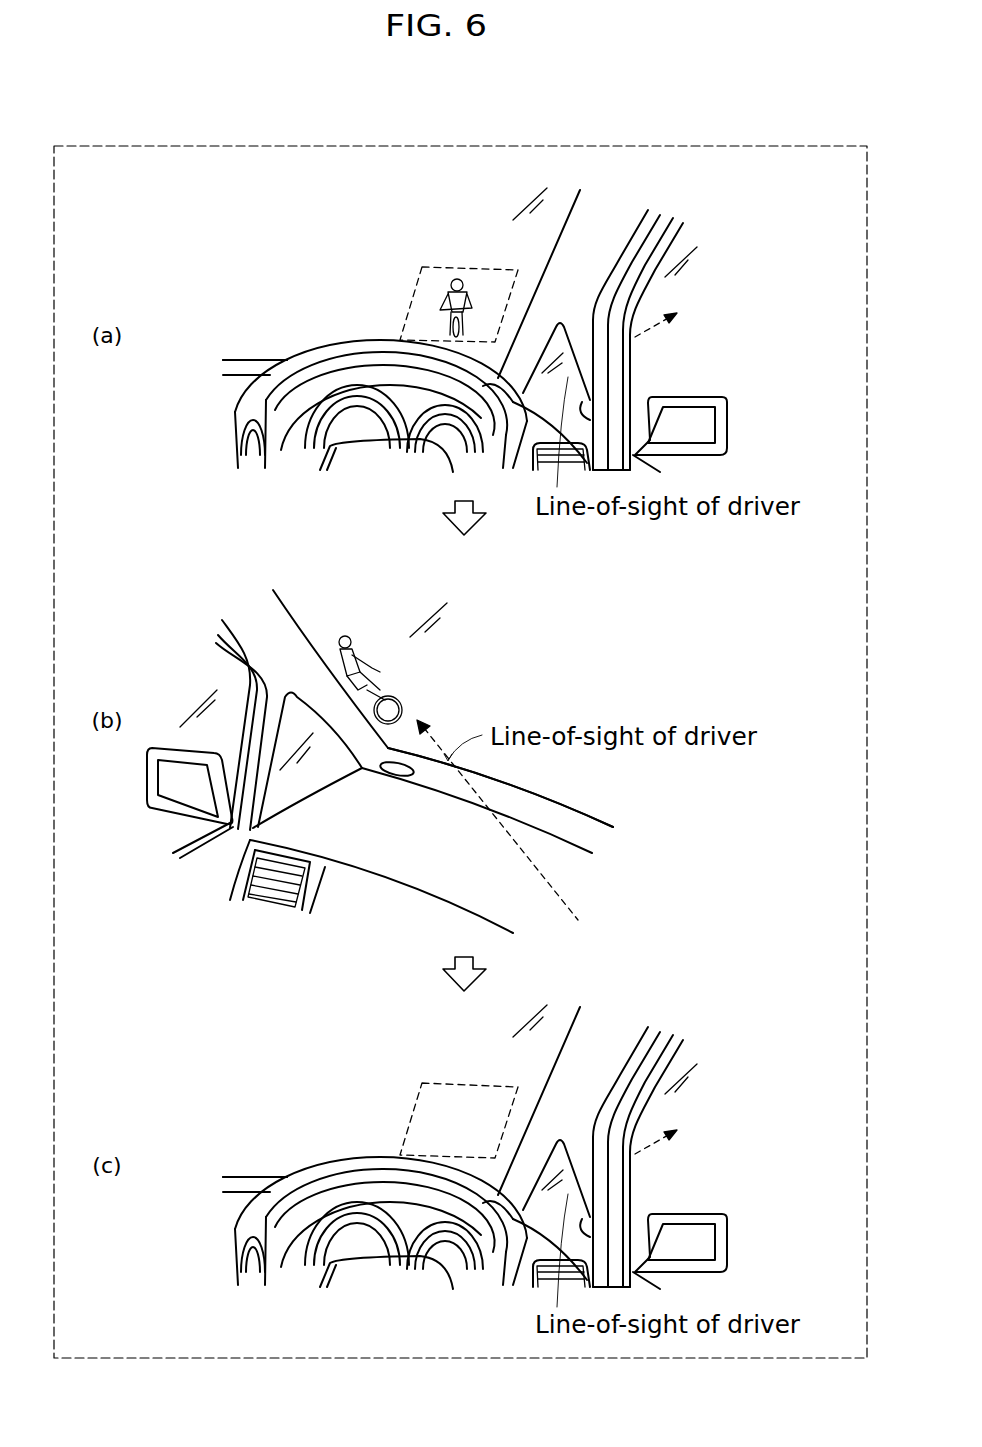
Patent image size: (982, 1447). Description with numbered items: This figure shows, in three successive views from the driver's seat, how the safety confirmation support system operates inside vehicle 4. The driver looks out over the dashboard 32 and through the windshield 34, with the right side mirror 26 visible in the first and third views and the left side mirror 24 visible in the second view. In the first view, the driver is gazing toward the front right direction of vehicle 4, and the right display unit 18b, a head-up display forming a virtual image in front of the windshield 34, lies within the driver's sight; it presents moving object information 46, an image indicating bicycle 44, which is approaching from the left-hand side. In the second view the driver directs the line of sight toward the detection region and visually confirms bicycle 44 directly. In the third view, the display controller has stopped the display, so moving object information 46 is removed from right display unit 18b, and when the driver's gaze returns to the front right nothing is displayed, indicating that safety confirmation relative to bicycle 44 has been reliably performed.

The vehicle 4 is at (328, 238).
The right display unit 18b is at (437, 267).
The moving object information 46 is at (481, 282).
The dashboard 32 is at (238, 385).
The windshield 34 is at (547, 240).
The right side mirror 26 is at (730, 418).
The left side mirror 24 is at (163, 747).
The bicycle 44 is at (343, 642).